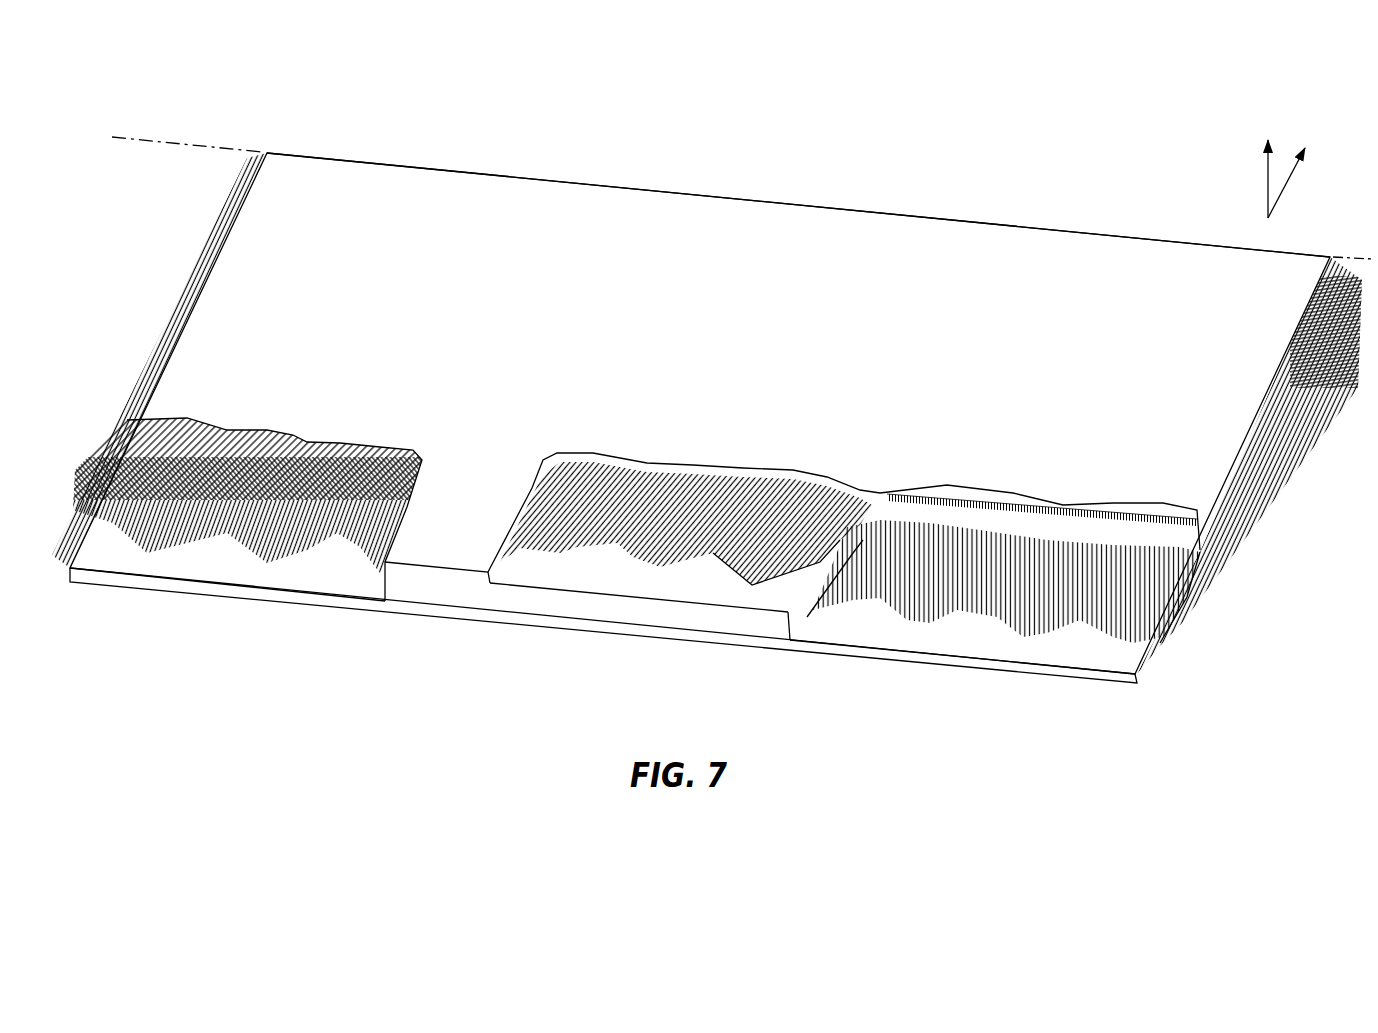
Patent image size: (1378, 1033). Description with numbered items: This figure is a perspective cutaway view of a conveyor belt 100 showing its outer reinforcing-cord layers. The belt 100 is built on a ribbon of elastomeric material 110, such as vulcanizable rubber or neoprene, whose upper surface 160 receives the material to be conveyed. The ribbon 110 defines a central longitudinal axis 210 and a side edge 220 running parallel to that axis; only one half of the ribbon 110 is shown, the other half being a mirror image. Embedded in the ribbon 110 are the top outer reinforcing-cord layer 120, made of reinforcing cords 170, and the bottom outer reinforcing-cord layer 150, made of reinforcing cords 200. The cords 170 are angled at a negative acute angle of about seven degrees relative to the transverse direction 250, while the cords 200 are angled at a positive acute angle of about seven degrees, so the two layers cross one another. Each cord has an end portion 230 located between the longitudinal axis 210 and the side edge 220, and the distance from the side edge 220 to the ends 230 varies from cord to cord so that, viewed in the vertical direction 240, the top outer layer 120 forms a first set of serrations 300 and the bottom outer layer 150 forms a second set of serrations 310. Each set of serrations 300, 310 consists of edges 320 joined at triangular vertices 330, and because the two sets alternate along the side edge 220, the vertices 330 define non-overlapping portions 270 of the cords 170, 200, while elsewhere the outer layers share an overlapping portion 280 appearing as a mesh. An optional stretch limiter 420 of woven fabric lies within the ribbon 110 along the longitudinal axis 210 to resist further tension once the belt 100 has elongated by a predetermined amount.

The belt 100 is at (1040, 745).
The ribbon of elastomeric material 110 is at (750, 215).
The top outer reinforcing-cord layer 120 is at (562, 552).
The bottom outer reinforcing-cord layer 150 is at (962, 613).
The upper surface 160 is at (697, 347).
The reinforcing cords 170 is at (633, 542).
The reinforcing cords 200 is at (937, 617).
The central longitudinal axis 210 is at (200, 143).
The side edge 220 is at (442, 582).
The end portion 230 is at (310, 560).
The vertical direction 240 is at (1265, 177).
The transverse direction 250 is at (1291, 183).
The non-overlapping portions 270 is at (230, 550).
The overlapping portion 280 is at (118, 478).
The first set of serrations 300 is at (733, 590).
The second set of serrations 310 is at (1082, 633).
The edges 320 is at (742, 575).
The triangular vertices 330 is at (753, 587).
The stretch limiter 420 is at (1335, 337).